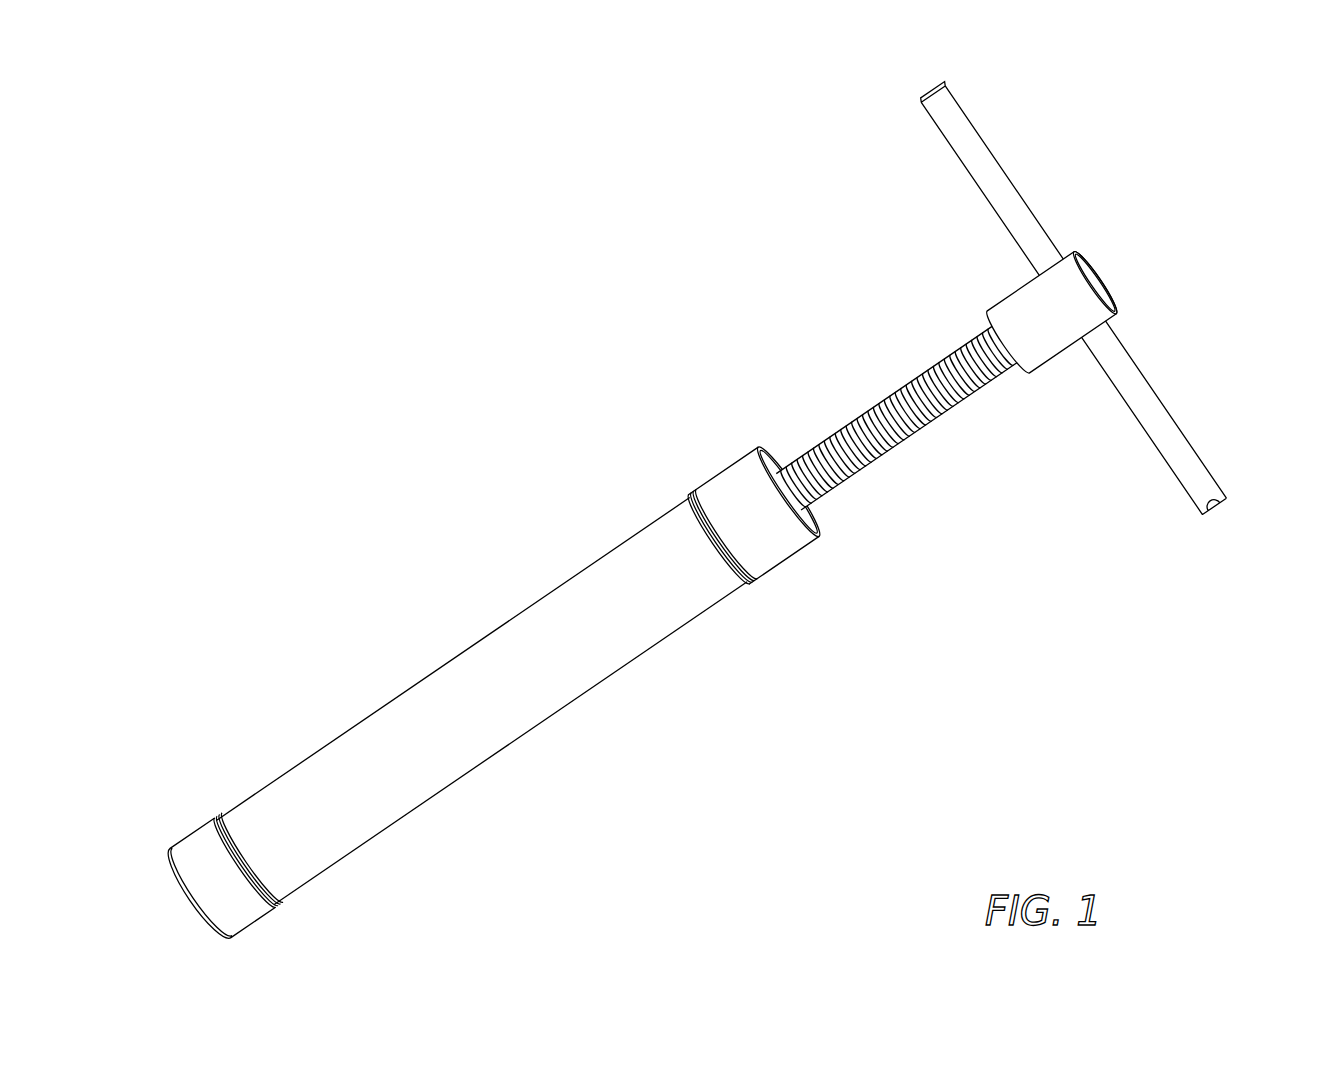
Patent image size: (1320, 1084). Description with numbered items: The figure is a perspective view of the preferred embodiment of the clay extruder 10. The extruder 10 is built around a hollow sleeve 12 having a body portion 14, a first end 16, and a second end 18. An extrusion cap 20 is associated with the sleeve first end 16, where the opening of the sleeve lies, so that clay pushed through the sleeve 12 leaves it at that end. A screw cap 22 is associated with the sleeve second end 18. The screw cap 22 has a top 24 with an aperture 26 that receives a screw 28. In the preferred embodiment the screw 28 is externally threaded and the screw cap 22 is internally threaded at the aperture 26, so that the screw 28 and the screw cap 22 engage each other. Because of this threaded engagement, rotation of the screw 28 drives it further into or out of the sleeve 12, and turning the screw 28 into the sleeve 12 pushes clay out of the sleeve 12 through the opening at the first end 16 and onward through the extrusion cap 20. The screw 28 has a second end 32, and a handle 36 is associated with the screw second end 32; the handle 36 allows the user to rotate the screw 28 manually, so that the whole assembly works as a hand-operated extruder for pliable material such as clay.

The clay extruder 10 is at (693, 513).
The hollow sleeve 12 is at (439, 658).
The body portion 14 is at (540, 679).
The first end 16 is at (218, 821).
The second end 18 is at (690, 498).
The extrusion cap 20 is at (181, 846).
The screw cap 22 is at (741, 455).
The top 24 is at (822, 537).
The aperture 26 is at (814, 514).
The screw 28 is at (885, 400).
The second end 32 is at (1014, 378).
The handle 36 is at (1123, 318).